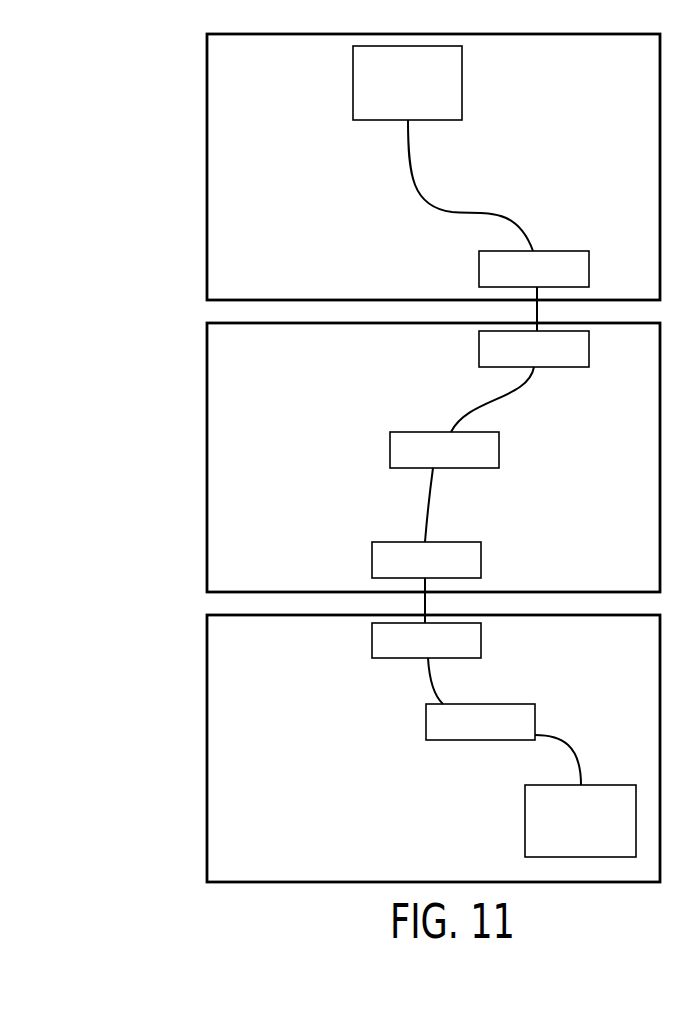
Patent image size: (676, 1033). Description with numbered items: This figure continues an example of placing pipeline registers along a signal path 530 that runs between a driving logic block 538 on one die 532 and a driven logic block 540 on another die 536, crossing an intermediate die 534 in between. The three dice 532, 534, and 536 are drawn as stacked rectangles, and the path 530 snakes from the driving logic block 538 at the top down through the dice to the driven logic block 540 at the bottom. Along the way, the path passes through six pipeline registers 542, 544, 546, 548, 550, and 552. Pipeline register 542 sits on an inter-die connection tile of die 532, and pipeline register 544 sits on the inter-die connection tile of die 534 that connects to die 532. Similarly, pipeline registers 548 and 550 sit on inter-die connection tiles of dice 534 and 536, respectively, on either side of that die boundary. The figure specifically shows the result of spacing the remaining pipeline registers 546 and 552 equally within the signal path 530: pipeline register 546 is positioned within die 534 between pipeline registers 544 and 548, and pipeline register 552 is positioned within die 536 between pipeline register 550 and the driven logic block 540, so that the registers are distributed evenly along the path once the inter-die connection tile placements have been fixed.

The path 530 is at (461, 212).
The die 532 is at (250, 174).
The die 534 is at (250, 466).
The die 536 is at (250, 756).
The driving logic block 538 is at (424, 109).
The driven logic block 540 is at (597, 847).
The pipeline register 542 is at (551, 280).
The pipeline register 544 is at (551, 360).
The pipeline register 546 is at (461, 461).
The pipeline register 548 is at (443, 571).
The pipeline register 550 is at (443, 651).
The pipeline register 552 is at (497, 733).